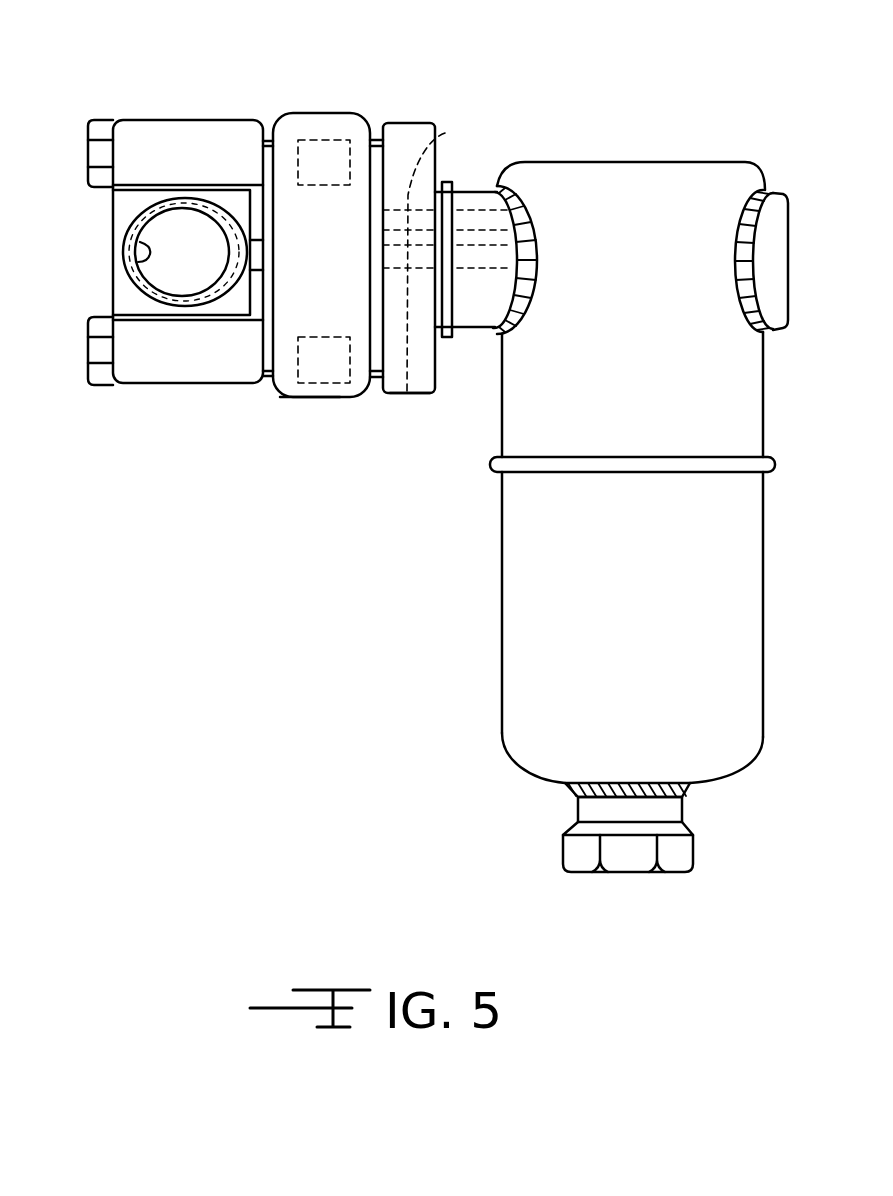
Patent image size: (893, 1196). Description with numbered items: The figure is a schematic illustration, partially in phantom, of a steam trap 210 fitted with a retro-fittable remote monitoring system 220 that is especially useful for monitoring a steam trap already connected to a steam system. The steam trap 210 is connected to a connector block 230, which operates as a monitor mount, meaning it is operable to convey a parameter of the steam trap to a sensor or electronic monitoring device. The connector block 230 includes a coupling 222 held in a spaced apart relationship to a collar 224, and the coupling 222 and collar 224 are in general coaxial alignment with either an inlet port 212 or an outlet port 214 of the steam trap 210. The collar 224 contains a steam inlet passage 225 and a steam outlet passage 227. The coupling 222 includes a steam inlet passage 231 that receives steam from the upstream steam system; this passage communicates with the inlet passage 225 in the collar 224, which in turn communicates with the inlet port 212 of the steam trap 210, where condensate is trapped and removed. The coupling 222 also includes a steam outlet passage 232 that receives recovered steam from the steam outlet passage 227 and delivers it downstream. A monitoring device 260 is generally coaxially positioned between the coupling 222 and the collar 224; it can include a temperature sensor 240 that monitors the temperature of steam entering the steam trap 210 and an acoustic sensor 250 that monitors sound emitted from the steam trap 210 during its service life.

The steam trap 210 is at (500, 652).
The inlet port 212 is at (477, 200).
The outlet port 214 is at (478, 190).
The remote monitoring system 220 is at (85, 433).
The coupling 222 is at (146, 120).
The collar 224 is at (406, 122).
The steam inlet passage 225 is at (407, 393).
The steam outlet passage 227 is at (445, 133).
The connector block 230 is at (200, 120).
The steam inlet passage 231 is at (125, 284).
The steam outlet passage 232 is at (135, 262).
The temperature sensor 240 is at (320, 128).
The acoustic sensor 250 is at (322, 400).
The monitoring device 260 is at (295, 400).